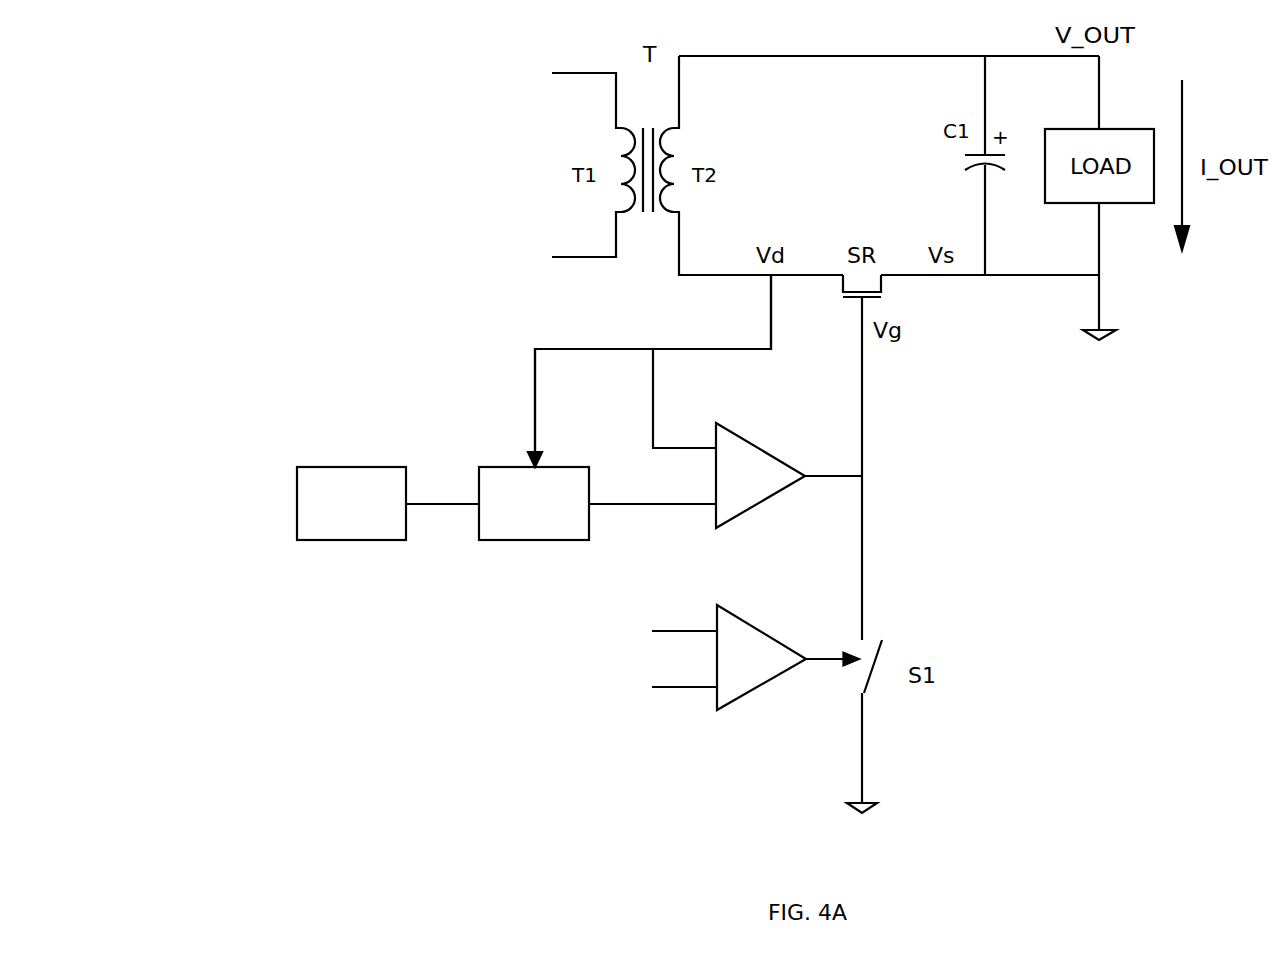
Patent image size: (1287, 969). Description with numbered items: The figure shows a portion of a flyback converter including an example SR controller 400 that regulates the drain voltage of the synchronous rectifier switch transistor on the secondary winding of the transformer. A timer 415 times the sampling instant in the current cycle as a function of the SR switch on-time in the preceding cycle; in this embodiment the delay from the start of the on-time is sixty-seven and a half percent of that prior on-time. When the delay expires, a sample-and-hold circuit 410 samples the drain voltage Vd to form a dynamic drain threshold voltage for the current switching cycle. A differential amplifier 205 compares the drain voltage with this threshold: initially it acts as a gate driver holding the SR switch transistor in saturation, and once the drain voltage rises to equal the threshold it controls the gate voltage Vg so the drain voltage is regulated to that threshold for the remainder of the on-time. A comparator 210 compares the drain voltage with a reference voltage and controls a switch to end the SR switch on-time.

The SR controller 400 is at (518, 340).
The timer 415 is at (297, 525).
The sample-and-hold circuit 410 is at (589, 540).
The differential amplifier 205 is at (770, 500).
The comparator 210 is at (770, 683).